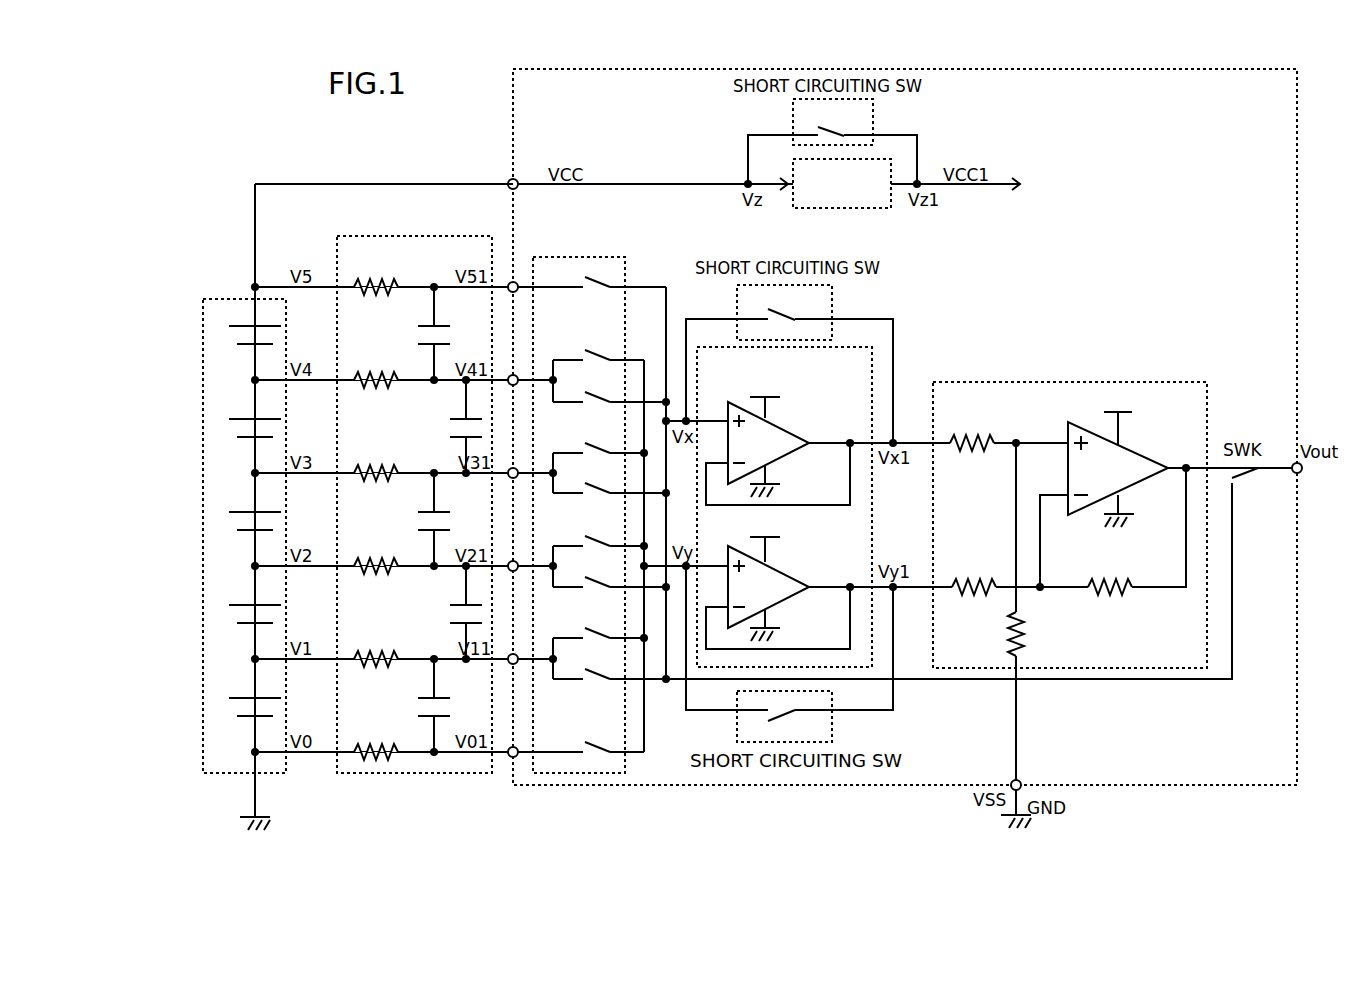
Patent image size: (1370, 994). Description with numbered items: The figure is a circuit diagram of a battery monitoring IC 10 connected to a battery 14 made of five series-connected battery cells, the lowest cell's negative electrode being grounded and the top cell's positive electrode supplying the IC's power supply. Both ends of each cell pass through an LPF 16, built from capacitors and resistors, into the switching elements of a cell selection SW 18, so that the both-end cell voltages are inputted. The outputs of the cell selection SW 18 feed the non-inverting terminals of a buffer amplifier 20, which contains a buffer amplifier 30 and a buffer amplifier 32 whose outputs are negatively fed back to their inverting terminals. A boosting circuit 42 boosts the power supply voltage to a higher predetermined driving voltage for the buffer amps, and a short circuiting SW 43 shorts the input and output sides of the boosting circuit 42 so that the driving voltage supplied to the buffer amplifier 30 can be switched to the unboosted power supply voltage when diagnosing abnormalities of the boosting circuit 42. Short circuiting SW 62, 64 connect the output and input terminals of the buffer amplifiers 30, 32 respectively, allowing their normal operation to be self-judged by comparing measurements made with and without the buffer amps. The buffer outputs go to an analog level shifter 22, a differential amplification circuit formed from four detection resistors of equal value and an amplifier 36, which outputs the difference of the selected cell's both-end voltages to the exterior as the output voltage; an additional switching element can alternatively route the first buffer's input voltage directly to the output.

The battery monitoring IC 10 is at (513, 128).
The battery 14 is at (286, 318).
The LPF 16 is at (442, 236).
The cell selection SW 18 is at (625, 257).
The buffer amplifier 20 is at (797, 494).
The analog level shifter 22 is at (1050, 565).
The buffer amplifier 30 is at (807, 412).
The buffer amplifier 32 is at (807, 561).
The amplifier 36 is at (1159, 428).
The boosting circuit 42 is at (845, 208).
The short circuiting SW 43 is at (873, 125).
The short circuiting SW 62 is at (832, 318).
The short circuiting SW 64 is at (832, 716).